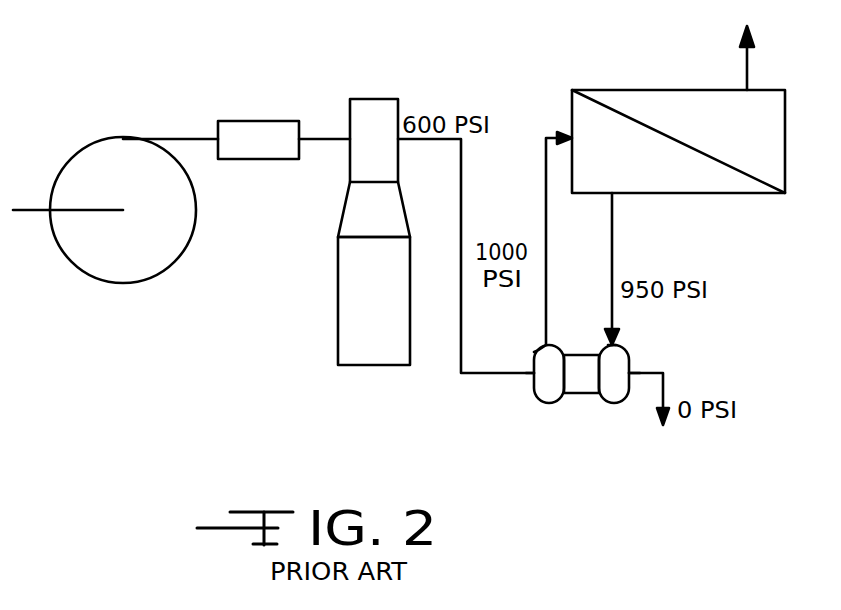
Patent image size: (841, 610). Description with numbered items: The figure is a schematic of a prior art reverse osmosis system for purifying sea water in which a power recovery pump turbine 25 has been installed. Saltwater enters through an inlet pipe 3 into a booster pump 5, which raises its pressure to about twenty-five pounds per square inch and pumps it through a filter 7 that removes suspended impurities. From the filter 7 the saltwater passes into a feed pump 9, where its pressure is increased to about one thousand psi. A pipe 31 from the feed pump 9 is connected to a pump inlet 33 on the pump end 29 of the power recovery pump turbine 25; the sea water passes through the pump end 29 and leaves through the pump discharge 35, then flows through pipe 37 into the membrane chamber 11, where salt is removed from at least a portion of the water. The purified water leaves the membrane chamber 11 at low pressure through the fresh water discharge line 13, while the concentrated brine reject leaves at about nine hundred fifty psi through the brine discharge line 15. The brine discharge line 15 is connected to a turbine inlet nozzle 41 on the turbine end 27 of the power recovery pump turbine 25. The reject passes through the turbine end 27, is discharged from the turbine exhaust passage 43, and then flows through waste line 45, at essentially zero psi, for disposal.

The inlet pipe 3 is at (30, 212).
The booster pump 5 is at (102, 139).
The filter 7 is at (257, 118).
The feed pump 9 is at (349, 100).
The membrane chamber 11 is at (635, 90).
The fresh water discharge line 13 is at (747, 68).
The brine discharge line 15 is at (612, 267).
The power recovery pump turbine 25 is at (579, 393).
The turbine end 27 is at (621, 402).
The pump end 29 is at (547, 396).
The pipe 31 is at (460, 355).
The pump inlet 33 is at (534, 377).
The pump discharge 35 is at (534, 352).
The pipe 37 is at (544, 172).
The turbine inlet nozzle 41 is at (615, 343).
The turbine exhaust passage 43 is at (630, 370).
The waste line 45 is at (665, 385).